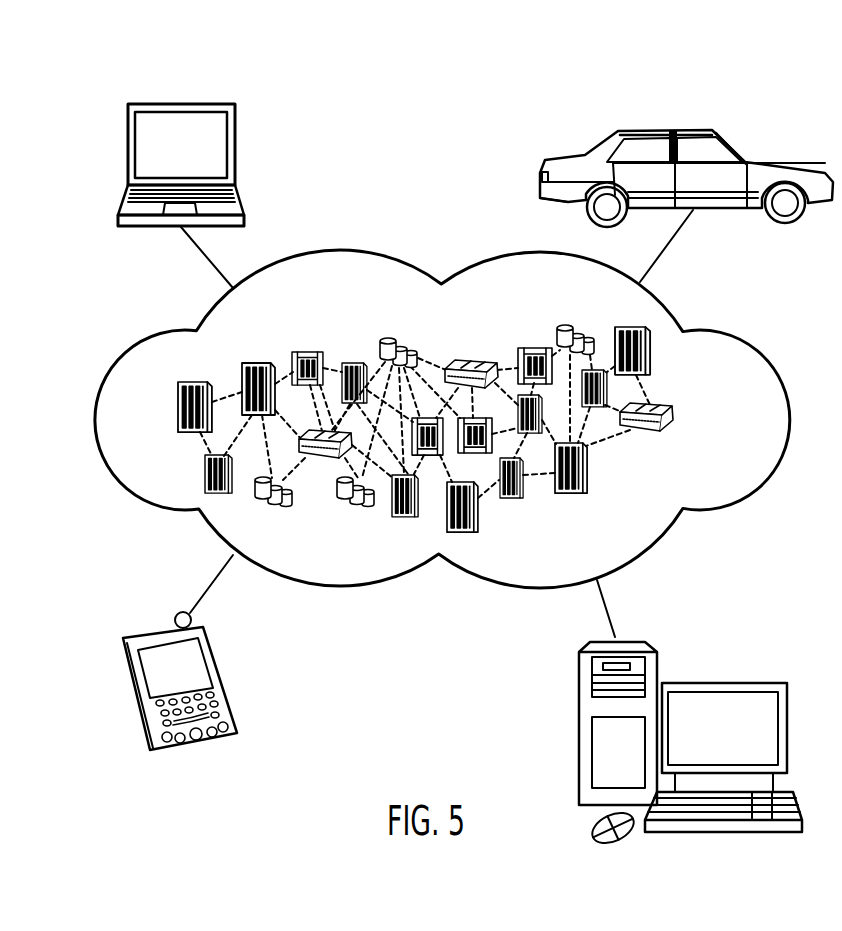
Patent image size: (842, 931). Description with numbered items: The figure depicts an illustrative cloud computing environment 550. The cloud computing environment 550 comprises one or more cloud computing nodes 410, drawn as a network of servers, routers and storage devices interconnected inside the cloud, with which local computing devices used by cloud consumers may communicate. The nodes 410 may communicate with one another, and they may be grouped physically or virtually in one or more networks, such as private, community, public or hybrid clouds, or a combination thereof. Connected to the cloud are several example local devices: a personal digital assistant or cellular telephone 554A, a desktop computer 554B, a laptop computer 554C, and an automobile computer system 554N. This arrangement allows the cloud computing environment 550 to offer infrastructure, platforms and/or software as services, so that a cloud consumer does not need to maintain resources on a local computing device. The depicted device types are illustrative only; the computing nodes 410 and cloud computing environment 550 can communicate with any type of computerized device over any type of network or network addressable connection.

The cloud computing environment 550 is at (733, 337).
The cloud computing node 410 is at (679, 419).
The personal digital assistant (PDA) or cellular telephone 554A is at (162, 627).
The desktop computer 554B is at (723, 682).
The laptop computer 554C is at (180, 103).
The automobile computer system 554N is at (665, 128).